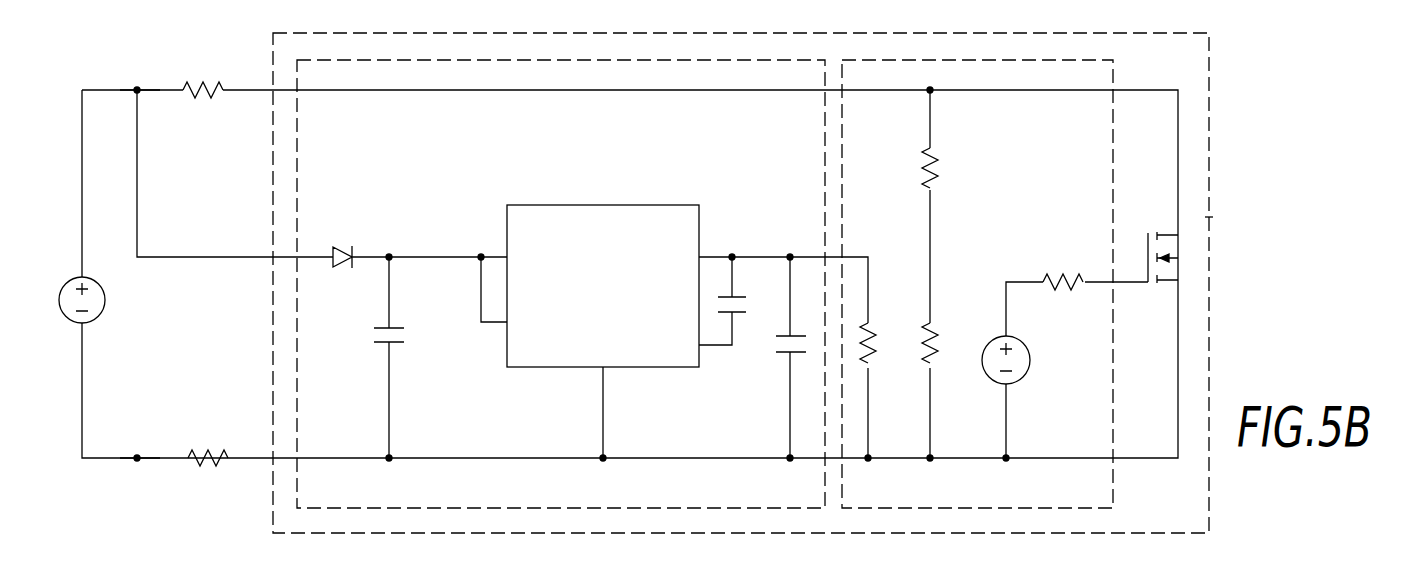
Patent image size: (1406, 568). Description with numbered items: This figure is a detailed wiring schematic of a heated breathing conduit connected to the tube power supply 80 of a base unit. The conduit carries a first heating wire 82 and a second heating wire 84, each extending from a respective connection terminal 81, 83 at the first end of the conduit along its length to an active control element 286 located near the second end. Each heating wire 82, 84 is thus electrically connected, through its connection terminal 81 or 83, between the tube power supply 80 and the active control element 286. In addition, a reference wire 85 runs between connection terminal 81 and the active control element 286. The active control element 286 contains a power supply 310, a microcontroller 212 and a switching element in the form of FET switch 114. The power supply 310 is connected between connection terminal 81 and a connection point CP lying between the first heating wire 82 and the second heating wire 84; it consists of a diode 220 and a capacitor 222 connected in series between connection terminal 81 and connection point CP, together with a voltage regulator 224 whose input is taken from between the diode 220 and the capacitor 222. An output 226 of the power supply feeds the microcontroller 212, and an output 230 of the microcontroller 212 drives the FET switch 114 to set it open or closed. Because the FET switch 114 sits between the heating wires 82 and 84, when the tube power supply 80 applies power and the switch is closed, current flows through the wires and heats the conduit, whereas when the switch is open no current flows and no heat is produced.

The tube power supply 80 is at (105, 305).
The connection terminal 81 is at (137, 91).
The first heating wire 82 is at (203, 78).
The connection terminal 83 is at (137, 458).
The second heating wire 84 is at (220, 440).
The reference wire 85 is at (190, 257).
The FET switch 114 is at (1136, 215).
The microcontroller 212 is at (1113, 78).
The diode 220 is at (352, 232).
The capacitor 222 is at (412, 342).
The voltage regulator 224 is at (570, 205).
The output 226 is at (790, 255).
The output 230 is at (1125, 284).
The active control element 286 is at (1209, 217).
The power supply 310 is at (703, 60).
The connection point CP is at (398, 470).